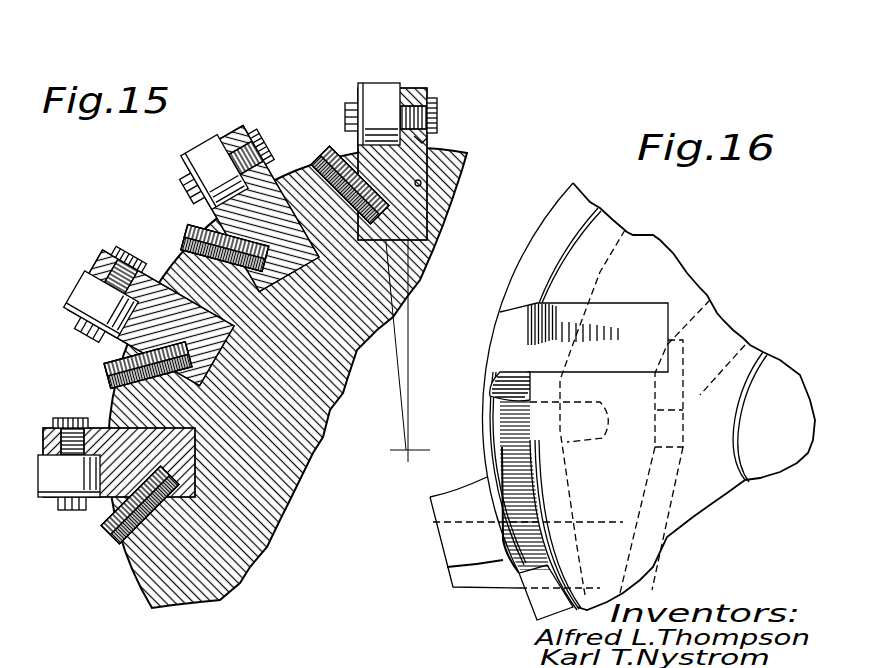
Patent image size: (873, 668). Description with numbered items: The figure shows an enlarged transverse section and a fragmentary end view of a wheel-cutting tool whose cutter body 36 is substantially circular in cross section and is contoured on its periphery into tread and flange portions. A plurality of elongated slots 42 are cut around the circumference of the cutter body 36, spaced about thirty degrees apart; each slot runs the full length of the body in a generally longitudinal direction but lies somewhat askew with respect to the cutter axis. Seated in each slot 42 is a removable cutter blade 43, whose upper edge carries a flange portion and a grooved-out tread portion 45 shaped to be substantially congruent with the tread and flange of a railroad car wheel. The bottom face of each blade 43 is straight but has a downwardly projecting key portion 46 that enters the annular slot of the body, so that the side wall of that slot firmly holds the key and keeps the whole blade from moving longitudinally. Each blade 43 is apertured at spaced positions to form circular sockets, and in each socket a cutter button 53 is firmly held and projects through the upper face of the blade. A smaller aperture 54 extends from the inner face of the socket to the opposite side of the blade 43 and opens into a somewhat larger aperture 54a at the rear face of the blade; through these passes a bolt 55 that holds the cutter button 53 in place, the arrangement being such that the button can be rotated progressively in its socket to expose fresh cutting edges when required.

In FIG. 15, the cutter body 36 is at (277, 503).
In FIG. 16, the cutter body 36 is at (688, 273).
In FIG. 15, the elongated slots 42 is at (421, 183).
In FIG. 15, the removable cutter blade 43 is at (232, 135).
In FIG. 16, the removable cutter blade 43 is at (597, 318).
In FIG. 16, the grooved-out tread portion 45 is at (568, 442).
In FIG. 16, the key portion 46 is at (750, 347).
In FIG. 15, the cutter button 53 is at (195, 152).
In FIG. 15, the smaller aperture 54 is at (100, 275).
In FIG. 15, the larger aperture 54a is at (420, 140).
In FIG. 15, the bolt 55 is at (280, 138).